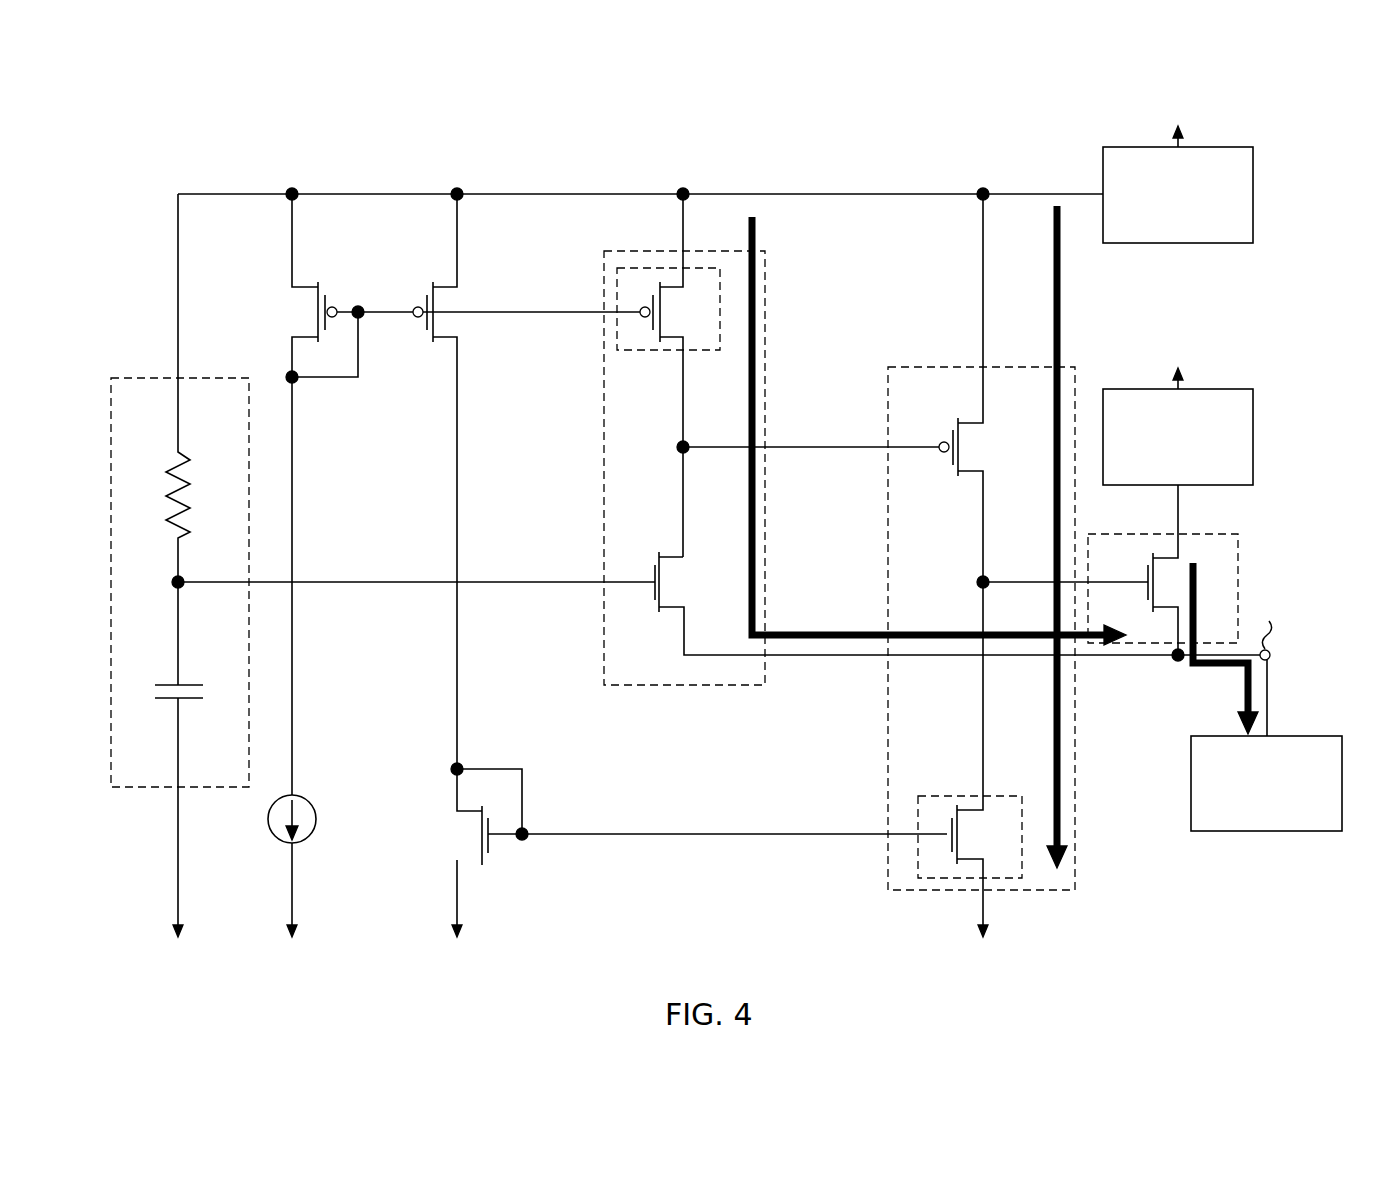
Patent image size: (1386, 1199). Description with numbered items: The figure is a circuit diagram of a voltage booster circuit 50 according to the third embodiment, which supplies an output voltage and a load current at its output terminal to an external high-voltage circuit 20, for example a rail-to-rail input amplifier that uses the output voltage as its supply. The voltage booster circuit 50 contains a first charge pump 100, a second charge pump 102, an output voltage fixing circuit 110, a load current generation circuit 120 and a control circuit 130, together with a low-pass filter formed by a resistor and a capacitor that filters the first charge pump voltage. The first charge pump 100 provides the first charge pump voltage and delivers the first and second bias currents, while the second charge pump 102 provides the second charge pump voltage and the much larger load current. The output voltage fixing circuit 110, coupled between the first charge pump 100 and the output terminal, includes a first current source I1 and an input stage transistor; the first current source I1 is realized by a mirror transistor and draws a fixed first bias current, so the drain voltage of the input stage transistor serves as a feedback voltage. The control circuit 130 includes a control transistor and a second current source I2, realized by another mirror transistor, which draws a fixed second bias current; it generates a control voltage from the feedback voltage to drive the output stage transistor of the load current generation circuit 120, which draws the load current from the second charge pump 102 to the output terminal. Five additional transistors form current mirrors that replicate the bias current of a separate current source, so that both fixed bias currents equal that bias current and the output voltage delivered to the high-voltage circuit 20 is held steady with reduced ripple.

The voltage booster circuit 50 is at (152, 162).
The first charge pump 100 is at (1253, 186).
The second charge pump 102 is at (1253, 436).
The output voltage fixing circuit 110 is at (768, 300).
The load current generation circuit 120 is at (1238, 570).
The control circuit 130 is at (925, 365).
The high-voltage circuit 20 is at (1267, 831).
The first current source I1 is at (636, 352).
The second current source I2 is at (1000, 796).